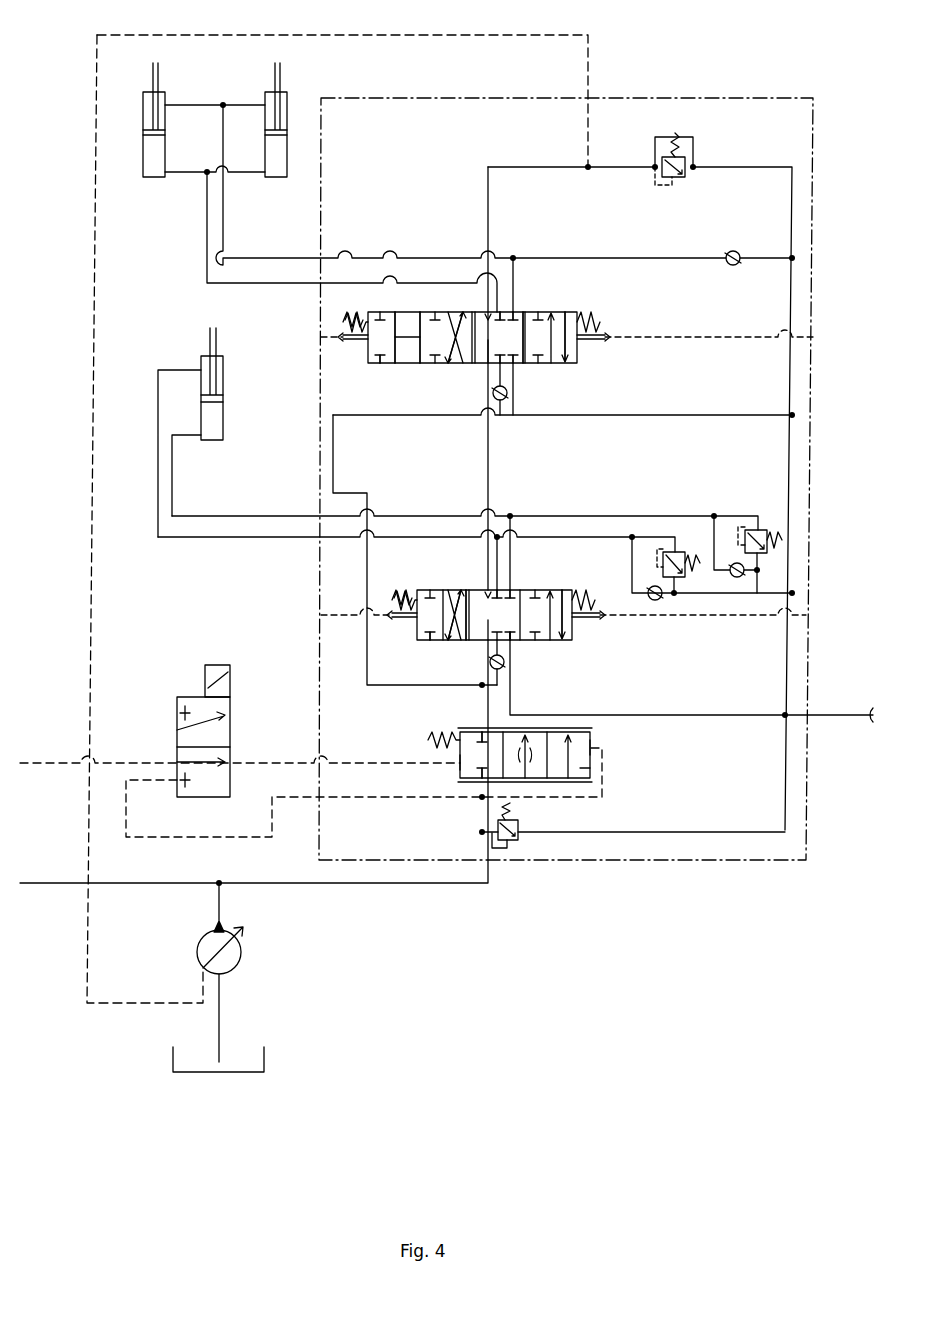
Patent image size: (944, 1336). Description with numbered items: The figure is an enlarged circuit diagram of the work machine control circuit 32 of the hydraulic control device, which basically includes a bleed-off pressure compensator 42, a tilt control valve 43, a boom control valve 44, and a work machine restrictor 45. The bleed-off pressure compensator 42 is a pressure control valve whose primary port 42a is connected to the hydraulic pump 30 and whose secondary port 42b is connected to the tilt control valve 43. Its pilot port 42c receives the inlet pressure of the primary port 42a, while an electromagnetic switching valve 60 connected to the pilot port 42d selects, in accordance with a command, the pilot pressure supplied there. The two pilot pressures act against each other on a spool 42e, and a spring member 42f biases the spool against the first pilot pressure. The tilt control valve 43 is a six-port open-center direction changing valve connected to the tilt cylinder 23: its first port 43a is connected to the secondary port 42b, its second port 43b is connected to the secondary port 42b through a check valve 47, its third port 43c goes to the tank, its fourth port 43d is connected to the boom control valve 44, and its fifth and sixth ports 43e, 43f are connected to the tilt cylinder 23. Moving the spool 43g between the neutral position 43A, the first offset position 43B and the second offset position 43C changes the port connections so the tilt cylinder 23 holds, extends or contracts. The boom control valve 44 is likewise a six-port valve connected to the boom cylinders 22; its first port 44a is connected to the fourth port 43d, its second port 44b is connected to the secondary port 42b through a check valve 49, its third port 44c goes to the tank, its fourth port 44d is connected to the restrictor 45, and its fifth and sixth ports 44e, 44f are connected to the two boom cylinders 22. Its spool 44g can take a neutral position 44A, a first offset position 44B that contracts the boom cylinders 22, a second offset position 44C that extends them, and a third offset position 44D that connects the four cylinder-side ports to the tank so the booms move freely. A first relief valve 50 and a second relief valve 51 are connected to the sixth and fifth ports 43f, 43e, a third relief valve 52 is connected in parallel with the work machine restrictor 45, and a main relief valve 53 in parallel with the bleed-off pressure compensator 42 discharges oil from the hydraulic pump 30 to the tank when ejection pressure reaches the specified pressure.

The boom cylinders 22 is at (260, 93).
The tilt cylinder 23 is at (223, 420).
The hydraulic pump 30 is at (236, 954).
The work machine control circuit 32 is at (790, 105).
The bleed-off pressure compensator 42 is at (462, 780).
The primary port 42a is at (481, 783).
The secondary port 42b is at (481, 728).
The pilot port 42c is at (590, 745).
The pilot port 42d is at (460, 762).
The spool 42e is at (583, 770).
The spring member 42f is at (428, 740).
The tilt control valve 43 is at (574, 590).
The neutral position 43A is at (486, 590).
The first offset position 43B is at (425, 641).
The second offset position 43C is at (566, 642).
The first port 43a is at (487, 641).
The second port 43b is at (513, 643).
The third port 43c is at (512, 642).
The fourth port 43d is at (480, 590).
The fifth port 43e is at (500, 590).
The sixth port 43f is at (513, 590).
The spool 43g is at (422, 590).
The boom control valve 44 is at (580, 312).
The neutral position 44A is at (526, 312).
The first offset position 44B is at (428, 325).
The second offset position 44C is at (570, 365).
The third offset position 44D is at (377, 364).
The first port 44a is at (487, 364).
The second port 44b is at (515, 365).
The third port 44c is at (505, 365).
The fourth port 44d is at (487, 325).
The fifth port 44e is at (503, 312).
The sixth port 44f is at (514, 312).
The spool 44g is at (370, 312).
The work machine restrictor 45 is at (676, 140).
The check valve 47 is at (500, 670).
The check valve 49 is at (504, 400).
The first relief valve 50 is at (757, 530).
The second relief valve 51 is at (677, 558).
The third relief valve 52 is at (676, 180).
The main relief valve 53 is at (520, 826).
The electromagnetic switching valve 60 is at (190, 697).